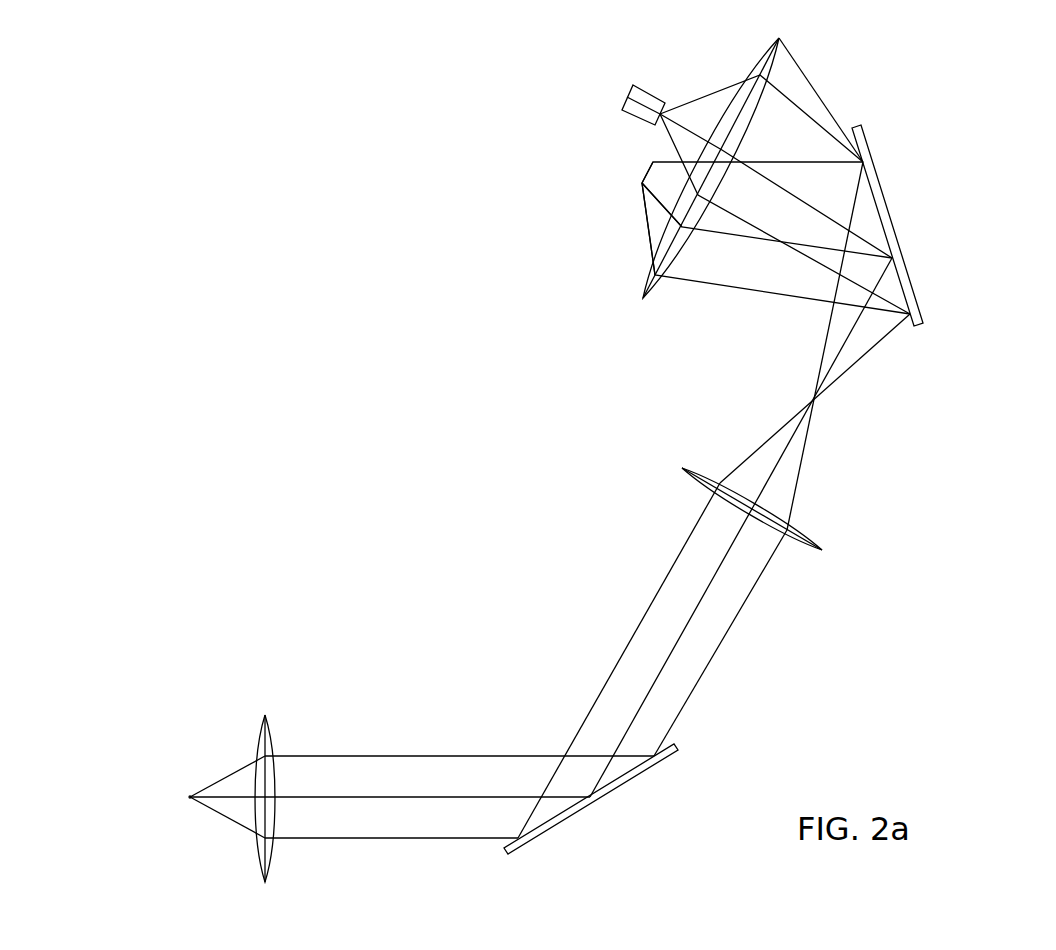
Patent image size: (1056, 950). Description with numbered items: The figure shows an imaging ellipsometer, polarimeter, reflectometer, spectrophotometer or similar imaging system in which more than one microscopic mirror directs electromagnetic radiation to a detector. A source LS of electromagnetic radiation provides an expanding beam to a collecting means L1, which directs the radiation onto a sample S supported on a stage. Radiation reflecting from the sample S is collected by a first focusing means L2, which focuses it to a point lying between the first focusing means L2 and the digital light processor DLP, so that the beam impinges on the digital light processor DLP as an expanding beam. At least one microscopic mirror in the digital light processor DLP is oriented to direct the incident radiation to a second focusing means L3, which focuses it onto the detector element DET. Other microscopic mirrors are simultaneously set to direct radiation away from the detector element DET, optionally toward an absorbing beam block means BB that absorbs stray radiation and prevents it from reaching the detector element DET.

The source of electromagnetic radiation LS is at (165, 802).
The collecting means L1 is at (276, 694).
The sample S is at (603, 817).
The first focusing means L2 is at (830, 562).
The digital light processor DLP is at (917, 253).
The second focusing means L3 is at (792, 39).
The detector element DET is at (630, 83).
The beam block means BB is at (630, 172).